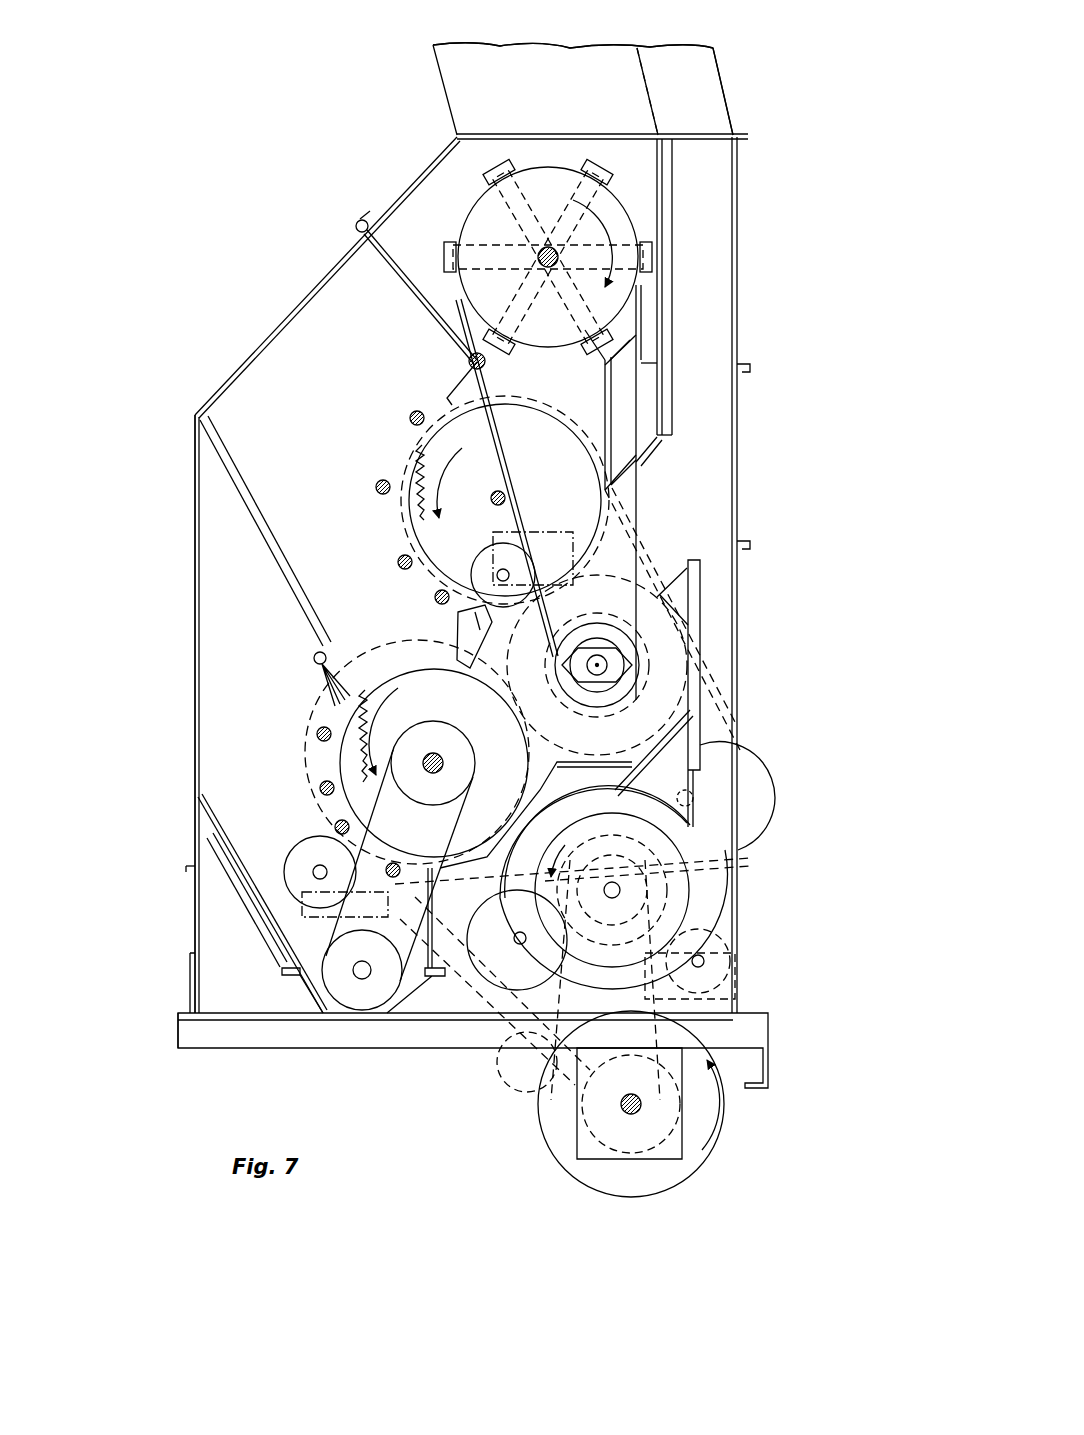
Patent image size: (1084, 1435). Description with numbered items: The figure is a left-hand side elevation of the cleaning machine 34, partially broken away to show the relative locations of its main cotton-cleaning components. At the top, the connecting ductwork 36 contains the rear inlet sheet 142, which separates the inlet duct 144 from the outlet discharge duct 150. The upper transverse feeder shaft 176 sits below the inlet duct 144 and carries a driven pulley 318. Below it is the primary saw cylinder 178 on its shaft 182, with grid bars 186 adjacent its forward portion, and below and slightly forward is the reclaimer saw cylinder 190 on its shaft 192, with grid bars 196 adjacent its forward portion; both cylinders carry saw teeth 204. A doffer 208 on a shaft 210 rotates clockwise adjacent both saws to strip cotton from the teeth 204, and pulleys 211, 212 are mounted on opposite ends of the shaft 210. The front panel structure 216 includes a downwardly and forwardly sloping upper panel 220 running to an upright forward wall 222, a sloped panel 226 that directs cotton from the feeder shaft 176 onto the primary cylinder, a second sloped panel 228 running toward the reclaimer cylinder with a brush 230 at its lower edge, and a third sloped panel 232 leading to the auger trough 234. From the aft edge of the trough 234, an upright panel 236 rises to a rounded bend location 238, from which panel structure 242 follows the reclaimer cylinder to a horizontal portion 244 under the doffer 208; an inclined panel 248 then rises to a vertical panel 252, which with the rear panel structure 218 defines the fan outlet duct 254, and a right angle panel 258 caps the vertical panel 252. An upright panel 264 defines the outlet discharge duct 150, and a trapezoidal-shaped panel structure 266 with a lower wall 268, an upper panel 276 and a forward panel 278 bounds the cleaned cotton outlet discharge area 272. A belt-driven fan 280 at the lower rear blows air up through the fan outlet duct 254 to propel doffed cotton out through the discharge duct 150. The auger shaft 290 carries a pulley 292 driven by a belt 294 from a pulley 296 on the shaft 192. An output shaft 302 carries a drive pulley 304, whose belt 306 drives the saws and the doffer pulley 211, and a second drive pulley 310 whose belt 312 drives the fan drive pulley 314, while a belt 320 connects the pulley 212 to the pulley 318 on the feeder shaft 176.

The cleaning machine 34 is at (200, 305).
The connecting ductwork 36 is at (435, 98).
The rear inlet sheet 142 is at (642, 88).
The inlet duct 144 is at (538, 75).
The outlet discharge duct 150 is at (678, 75).
The upper transverse feeder shaft 176 is at (538, 158).
The primary saw cylinder 178 is at (398, 440).
The shaft 182 is at (493, 515).
The grid bars 186 is at (420, 410).
The reclaimer saw cylinder 190 is at (393, 660).
The shaft 192 is at (440, 750).
The grid bars 196 is at (316, 733).
The saw teeth 204 is at (420, 500).
The doffer 208 is at (605, 555).
The shaft 210 is at (607, 665).
The pulley 211 is at (640, 690).
The pulley 212 is at (622, 686).
The front panel structure 216 is at (190, 412).
The rear panel structure 218 is at (752, 388).
The upper panel 220 is at (258, 360).
The forward wall 222 is at (195, 483).
The sloped panel 226 is at (400, 270).
The second sloped panel 228 is at (252, 500).
The brush 230 is at (314, 660).
The third sloped panel 232 is at (226, 862).
The auger trough 234 is at (305, 990).
The upright panel 236 is at (516, 936).
The rounded bend location 238 is at (420, 868).
The panel structure 242 is at (510, 840).
The horizontal portion 244 is at (590, 760).
The inclined panel 248 is at (660, 755).
The vertical panel 252 is at (700, 650).
The fan outlet duct 254 is at (725, 560).
The right angle panel 258 is at (694, 580).
The upright panel 264 is at (662, 228).
The trapezoidal-shaped panel structure 266 is at (604, 380).
The lower wall 268 is at (648, 440).
The cleaned cotton outlet discharge area 272 is at (690, 462).
The upper panel 276 is at (645, 320).
The forward panel 278 is at (605, 445).
The belt-driven fan 280 is at (690, 905).
The shaft 290 is at (355, 1012).
The pulley 292 is at (362, 980).
The belt 294 is at (318, 1000).
The pulley 296 is at (462, 752).
The output shaft 302 is at (642, 1106).
The drive pulley 304 is at (690, 1150).
The belt 306 is at (533, 1057).
The second drive pulley 310 is at (555, 1128).
The belt 312 is at (500, 1043).
The fan drive pulley 314 is at (740, 870).
The driven pulley 318 is at (495, 195).
The belt 320 is at (657, 363).